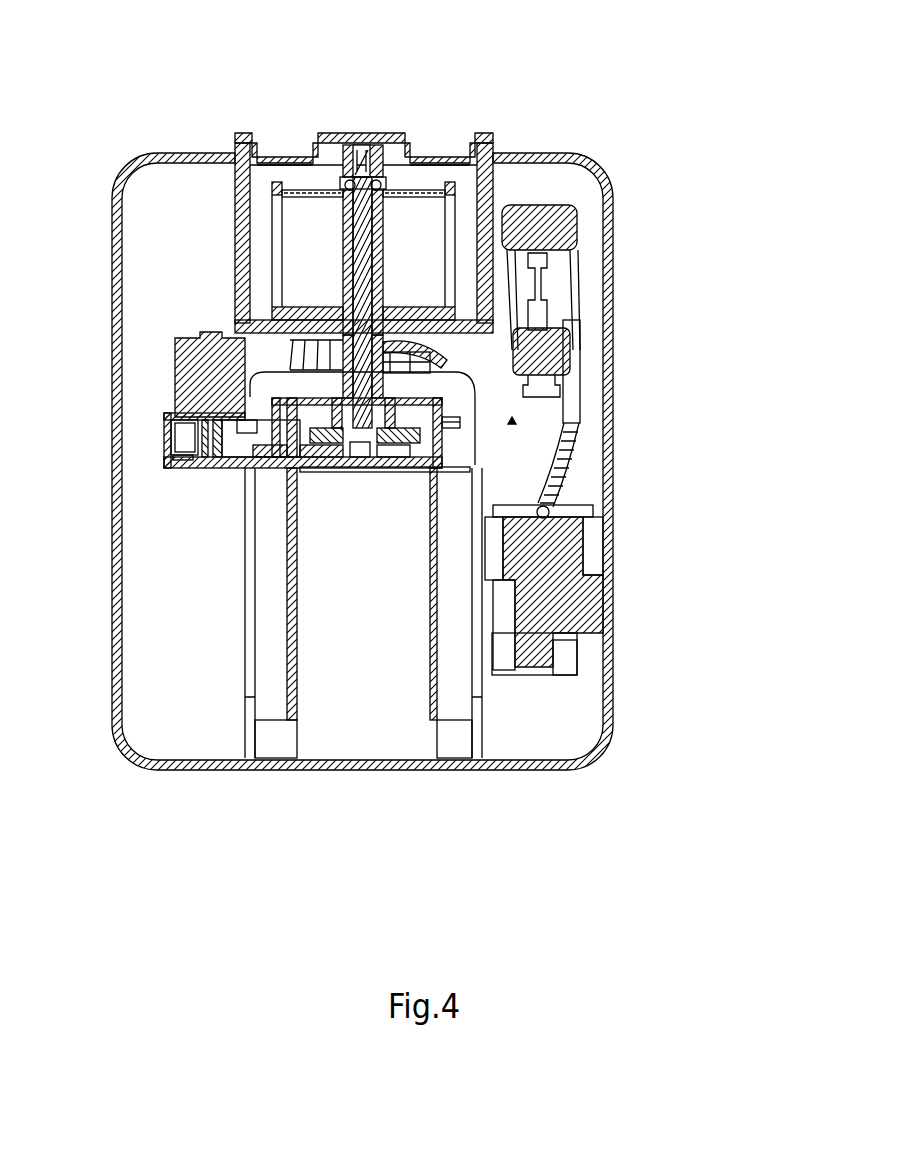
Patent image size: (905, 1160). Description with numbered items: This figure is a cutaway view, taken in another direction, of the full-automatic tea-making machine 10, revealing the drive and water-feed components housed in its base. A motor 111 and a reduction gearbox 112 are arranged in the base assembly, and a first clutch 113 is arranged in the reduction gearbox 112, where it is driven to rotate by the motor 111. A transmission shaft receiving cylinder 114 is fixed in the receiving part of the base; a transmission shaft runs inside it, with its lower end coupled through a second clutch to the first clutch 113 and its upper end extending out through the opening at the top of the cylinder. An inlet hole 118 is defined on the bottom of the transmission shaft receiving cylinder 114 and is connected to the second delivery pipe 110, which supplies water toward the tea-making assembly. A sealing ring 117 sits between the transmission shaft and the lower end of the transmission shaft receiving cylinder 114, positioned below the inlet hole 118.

The full-automatic tea-making machine 10 is at (723, 118).
The second delivery pipe 110 is at (437, 355).
The motor 111 is at (180, 397).
The reduction gearbox 112 is at (210, 458).
The first clutch 113 is at (417, 438).
The transmission shaft receiving cylinder 114 is at (380, 383).
The sealing ring 117 is at (353, 365).
The inlet hole 118 is at (443, 313).